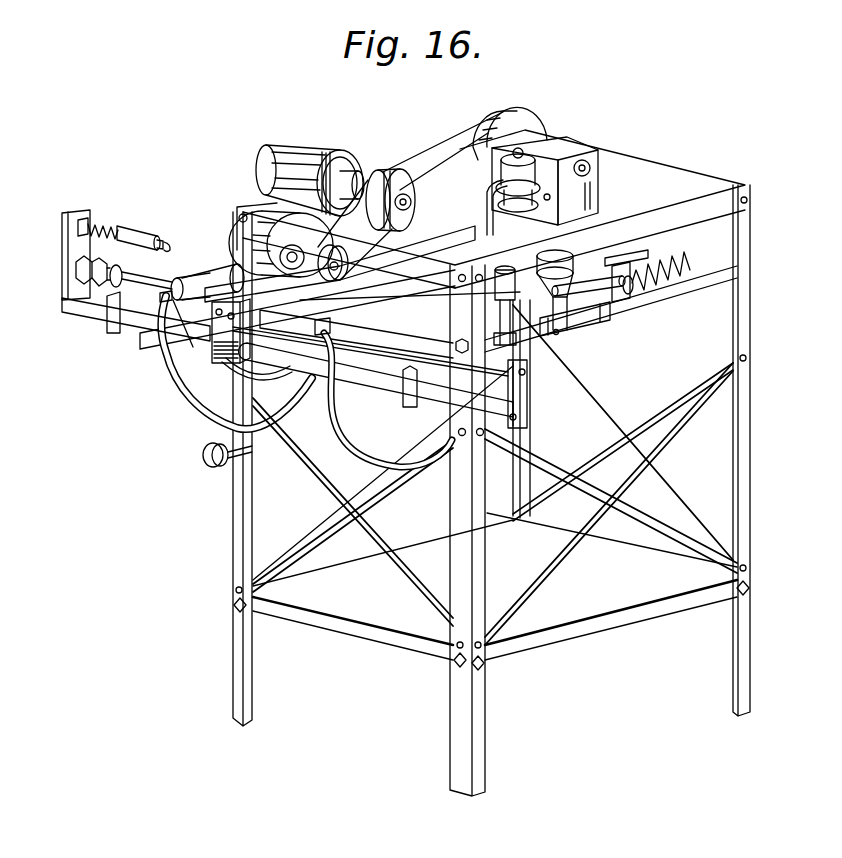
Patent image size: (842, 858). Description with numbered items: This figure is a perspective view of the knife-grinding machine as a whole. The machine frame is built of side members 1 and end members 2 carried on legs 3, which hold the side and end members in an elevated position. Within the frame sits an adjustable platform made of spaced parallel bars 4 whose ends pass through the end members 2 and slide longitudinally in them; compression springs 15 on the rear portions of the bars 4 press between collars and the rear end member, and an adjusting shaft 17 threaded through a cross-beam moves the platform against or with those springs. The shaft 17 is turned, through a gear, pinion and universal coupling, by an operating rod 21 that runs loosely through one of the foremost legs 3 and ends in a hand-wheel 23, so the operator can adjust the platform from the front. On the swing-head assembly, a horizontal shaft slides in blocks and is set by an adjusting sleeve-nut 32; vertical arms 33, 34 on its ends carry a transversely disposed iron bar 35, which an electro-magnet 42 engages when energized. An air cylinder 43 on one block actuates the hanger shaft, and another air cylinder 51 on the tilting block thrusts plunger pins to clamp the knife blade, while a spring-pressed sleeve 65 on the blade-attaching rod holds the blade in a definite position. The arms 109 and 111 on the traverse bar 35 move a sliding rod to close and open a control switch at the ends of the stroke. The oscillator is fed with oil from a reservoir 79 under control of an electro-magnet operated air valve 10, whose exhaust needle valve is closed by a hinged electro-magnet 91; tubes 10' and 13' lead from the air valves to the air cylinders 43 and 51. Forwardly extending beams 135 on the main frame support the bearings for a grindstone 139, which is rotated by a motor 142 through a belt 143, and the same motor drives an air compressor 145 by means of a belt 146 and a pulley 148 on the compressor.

The side members 1 is at (650, 170).
The end members 2 is at (705, 277).
The legs 3 is at (233, 657).
The parallel bars 4 is at (600, 294).
The electro-magnet operated air valve 10 is at (544, 280).
The tube 10' is at (383, 392).
The tube 13' is at (229, 361).
The compression springs 15 is at (652, 283).
The adjusting shaft 17 is at (630, 250).
The operating rod 21 is at (277, 436).
The hand-wheel 23 is at (207, 467).
The adjusting sleeve-nut 32 is at (106, 264).
The vertical arm 33 is at (72, 222).
The vertical arm 34 is at (527, 390).
The iron bar 35 is at (93, 315).
The electro-magnet 42 is at (230, 362).
The air cylinder 43 is at (265, 371).
The air cylinder 51 is at (193, 280).
The spring-pressed sleeve 65 is at (133, 228).
The reservoir 79 is at (508, 268).
The electro-magnet 91 is at (583, 328).
The arm 109 is at (112, 334).
The arm 111 is at (403, 405).
The forwardly extending beams 135 is at (433, 248).
The grindstone 139 is at (250, 262).
The motor 142 is at (390, 170).
The belt 143 is at (385, 242).
The air compressor 145 is at (537, 152).
The belt 146 is at (448, 157).
The pulley 148 is at (518, 123).